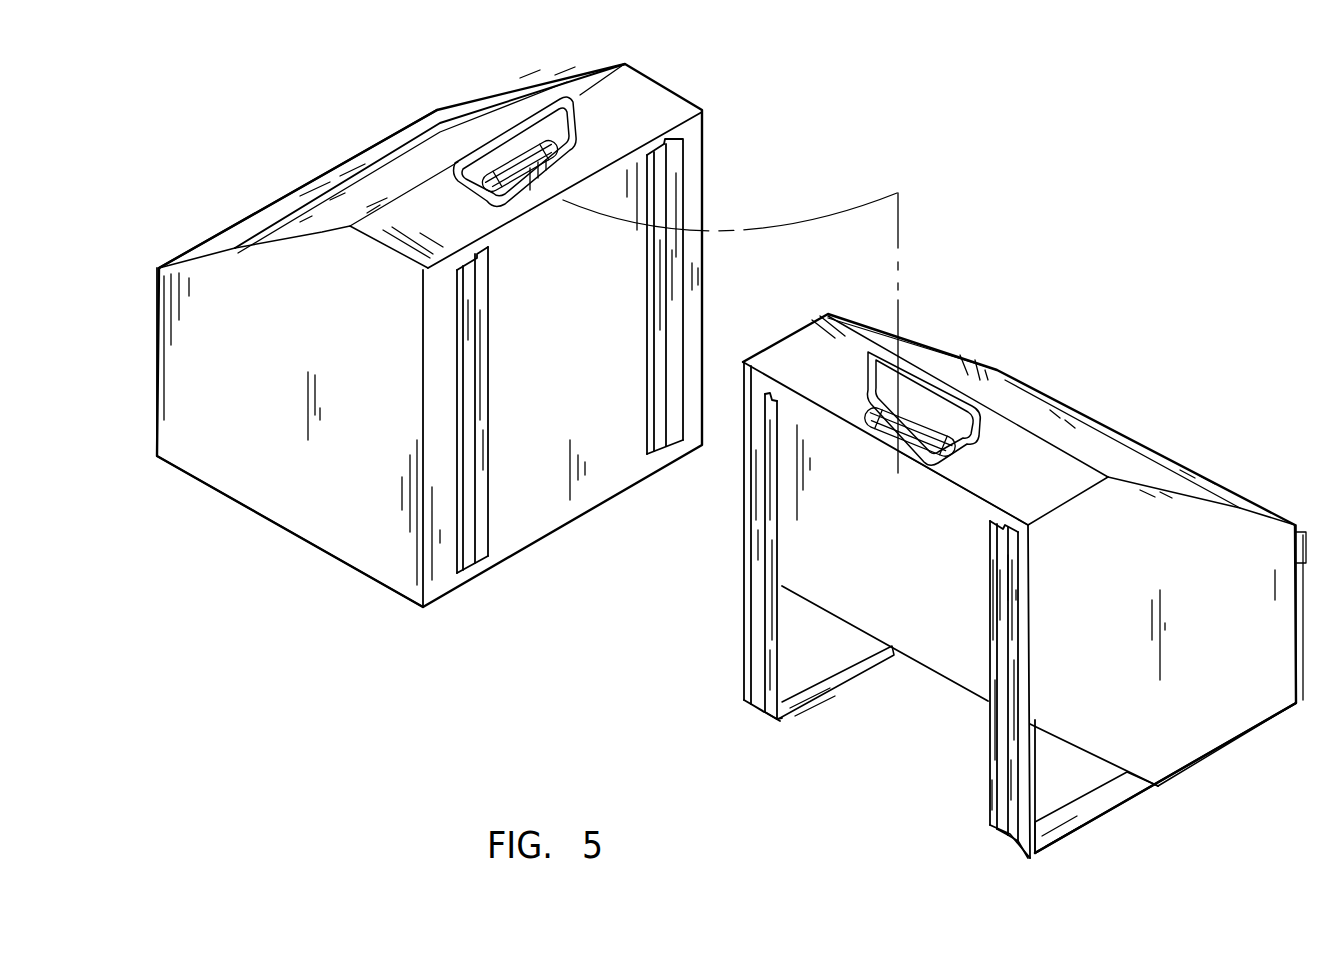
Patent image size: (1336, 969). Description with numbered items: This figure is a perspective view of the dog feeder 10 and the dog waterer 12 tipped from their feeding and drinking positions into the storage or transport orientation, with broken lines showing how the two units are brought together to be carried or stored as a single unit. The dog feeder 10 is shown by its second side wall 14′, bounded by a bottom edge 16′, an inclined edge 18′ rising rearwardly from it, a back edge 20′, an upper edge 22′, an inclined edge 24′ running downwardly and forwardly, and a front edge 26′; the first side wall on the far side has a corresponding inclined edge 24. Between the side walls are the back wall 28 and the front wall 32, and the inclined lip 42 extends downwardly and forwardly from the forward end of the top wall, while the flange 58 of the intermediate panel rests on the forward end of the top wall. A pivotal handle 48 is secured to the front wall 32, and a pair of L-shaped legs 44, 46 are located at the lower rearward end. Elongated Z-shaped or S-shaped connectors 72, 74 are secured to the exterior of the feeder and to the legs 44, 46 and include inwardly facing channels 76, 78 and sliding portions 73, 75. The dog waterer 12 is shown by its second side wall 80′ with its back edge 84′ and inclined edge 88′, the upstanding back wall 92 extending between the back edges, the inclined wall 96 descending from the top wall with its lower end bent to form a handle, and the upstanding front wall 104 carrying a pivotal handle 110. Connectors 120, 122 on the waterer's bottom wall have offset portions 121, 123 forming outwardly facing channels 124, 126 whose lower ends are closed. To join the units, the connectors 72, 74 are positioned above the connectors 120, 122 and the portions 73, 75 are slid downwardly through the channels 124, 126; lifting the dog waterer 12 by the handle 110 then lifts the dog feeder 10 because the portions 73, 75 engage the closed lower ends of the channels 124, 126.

The dog feeder 10 is at (1105, 336).
The dog waterer 12 is at (722, 90).
The second side wall 14′ is at (1190, 540).
The bottom edge 16′ is at (1025, 565).
The inclined edge 18′ is at (1085, 745).
The back edge 20′ is at (1232, 745).
The upper edge 22′ is at (1303, 660).
The inclined edge 24 is at (755, 333).
The inclined edge 24′ is at (1135, 486).
The front edge 26′ is at (1020, 470).
The back wall 28 is at (885, 629).
The front wall 32 is at (1043, 474).
The inclined lip 42 is at (1060, 392).
The L-shaped leg 44 is at (822, 673).
The L-shaped leg 46 is at (1083, 813).
The pivotal handle 48 is at (930, 378).
The rearwardly extending flange 58 is at (1305, 540).
The connector 72 is at (745, 548).
The portion of connector 73 is at (770, 490).
The connector 74 is at (1022, 662).
The portion of connector 75 is at (1000, 620).
The inwardly facing channel 76 is at (774, 394).
The inwardly facing channel 78 is at (995, 522).
The second side wall 80′ is at (320, 483).
The back edge 84′ is at (322, 560).
The inclined edge 88′ is at (422, 410).
The back wall 92 is at (565, 247).
The inclined wall 96 is at (362, 162).
The front wall 104 is at (494, 145).
The pivotal handle 110 is at (522, 122).
The connector 120 is at (684, 207).
The offset portion 121 is at (678, 182).
The connector 122 is at (494, 313).
The offset portion 123 is at (470, 360).
The outwardly facing channel 124 is at (672, 142).
The outwardly facing channel 126 is at (469, 254).